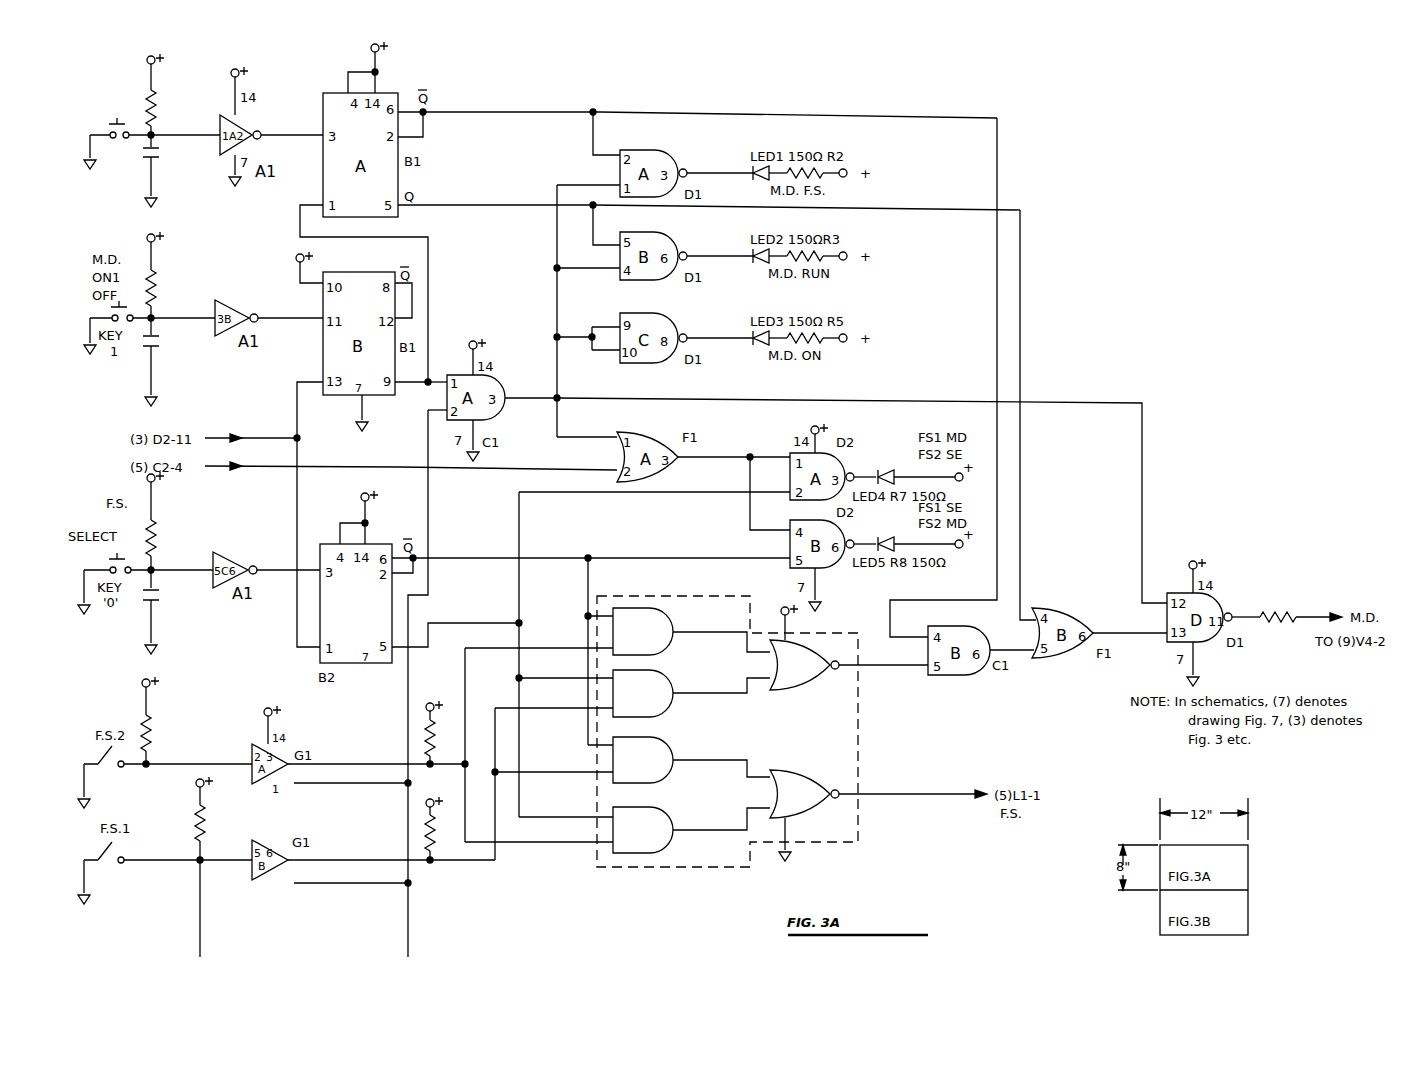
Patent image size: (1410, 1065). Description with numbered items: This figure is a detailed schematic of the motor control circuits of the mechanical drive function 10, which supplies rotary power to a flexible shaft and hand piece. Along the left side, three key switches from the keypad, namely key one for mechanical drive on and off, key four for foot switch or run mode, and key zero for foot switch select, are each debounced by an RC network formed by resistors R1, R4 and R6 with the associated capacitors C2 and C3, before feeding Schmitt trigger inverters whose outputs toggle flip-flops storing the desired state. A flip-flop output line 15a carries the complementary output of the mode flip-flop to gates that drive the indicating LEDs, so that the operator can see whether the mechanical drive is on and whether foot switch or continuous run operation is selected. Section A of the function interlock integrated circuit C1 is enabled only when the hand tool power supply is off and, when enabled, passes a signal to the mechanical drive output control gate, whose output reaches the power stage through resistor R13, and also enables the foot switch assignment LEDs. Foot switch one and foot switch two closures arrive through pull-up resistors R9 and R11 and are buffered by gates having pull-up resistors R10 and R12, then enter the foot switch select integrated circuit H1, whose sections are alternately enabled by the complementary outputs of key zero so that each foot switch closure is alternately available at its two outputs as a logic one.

The mechanical drive function 10 is at (112, 193).
The flip-flop Q-bar output conductor 15a is at (773, 109).
The resistor R1 (10K) R1 is at (166, 96).
The resistor R4 (10K) R4 is at (166, 276).
The resistor R6 (10k) R6 is at (165, 522).
The resistor R9 (5.1K) R9 is at (162, 722).
The resistor R10 (5.1K) R10 is at (443, 734).
The resistor R11 (5.1K) R11 is at (218, 820).
The resistor R12 (5.1K) R12 is at (443, 830).
The resistor R13 (270 ohm) R13 is at (1287, 596).
The function interlock integrated circuit C1 is at (167, 172).
The capacitor C2 (2.2 uF) C2 is at (167, 363).
The capacitor C3 (2.2 uF) C3 is at (167, 616).
The foot switch select integrated circuit H1 is at (727, 731).